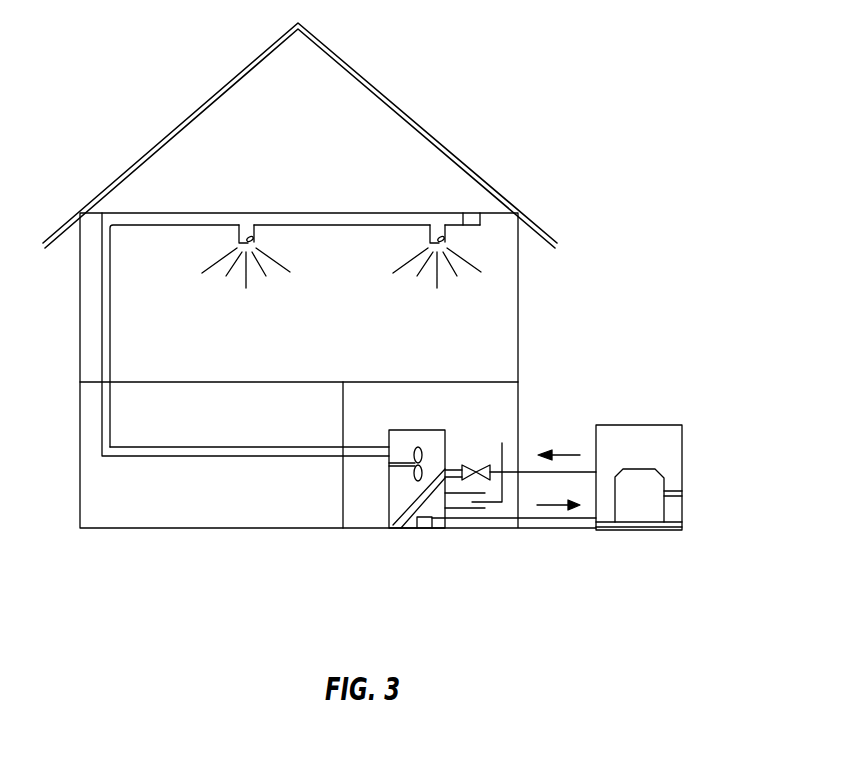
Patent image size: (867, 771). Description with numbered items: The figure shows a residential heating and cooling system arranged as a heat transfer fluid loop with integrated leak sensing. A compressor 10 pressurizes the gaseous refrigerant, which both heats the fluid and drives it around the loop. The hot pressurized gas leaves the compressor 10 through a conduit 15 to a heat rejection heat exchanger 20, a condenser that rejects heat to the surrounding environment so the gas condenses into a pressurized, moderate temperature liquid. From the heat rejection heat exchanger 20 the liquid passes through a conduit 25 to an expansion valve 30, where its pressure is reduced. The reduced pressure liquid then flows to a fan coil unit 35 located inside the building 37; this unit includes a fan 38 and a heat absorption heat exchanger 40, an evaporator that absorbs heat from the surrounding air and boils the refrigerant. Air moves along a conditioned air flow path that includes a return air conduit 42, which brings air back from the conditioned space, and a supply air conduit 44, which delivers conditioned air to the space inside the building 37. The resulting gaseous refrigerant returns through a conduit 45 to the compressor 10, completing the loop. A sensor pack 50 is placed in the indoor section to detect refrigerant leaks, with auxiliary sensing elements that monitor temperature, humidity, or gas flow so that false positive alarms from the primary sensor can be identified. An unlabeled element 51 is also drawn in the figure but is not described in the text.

The pump unit 10 is at (657, 471).
The outlet pipe 15 is at (672, 495).
The tank 20 is at (683, 470).
The supply conduit 25 is at (527, 472).
The valve 30 is at (470, 465).
The heat exchanger housing 35 is at (437, 432).
The building 37 is at (520, 260).
The fan 38 is at (402, 470).
The inclined pipe 40 is at (400, 507).
The drain line 42 is at (503, 488).
The sprinkler piping 44 is at (105, 348).
The return conduit 45 is at (570, 520).
The fitting 50 is at (426, 530).
The interior wall 51 is at (362, 413).